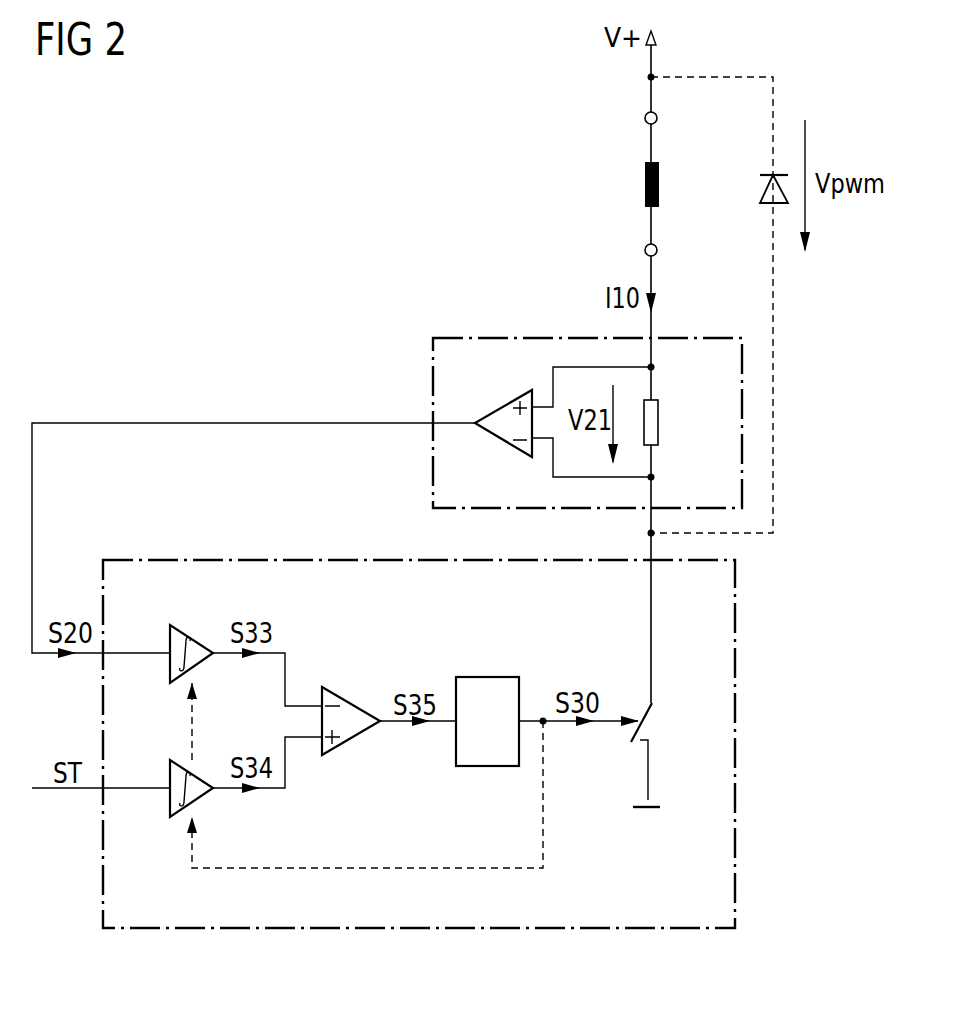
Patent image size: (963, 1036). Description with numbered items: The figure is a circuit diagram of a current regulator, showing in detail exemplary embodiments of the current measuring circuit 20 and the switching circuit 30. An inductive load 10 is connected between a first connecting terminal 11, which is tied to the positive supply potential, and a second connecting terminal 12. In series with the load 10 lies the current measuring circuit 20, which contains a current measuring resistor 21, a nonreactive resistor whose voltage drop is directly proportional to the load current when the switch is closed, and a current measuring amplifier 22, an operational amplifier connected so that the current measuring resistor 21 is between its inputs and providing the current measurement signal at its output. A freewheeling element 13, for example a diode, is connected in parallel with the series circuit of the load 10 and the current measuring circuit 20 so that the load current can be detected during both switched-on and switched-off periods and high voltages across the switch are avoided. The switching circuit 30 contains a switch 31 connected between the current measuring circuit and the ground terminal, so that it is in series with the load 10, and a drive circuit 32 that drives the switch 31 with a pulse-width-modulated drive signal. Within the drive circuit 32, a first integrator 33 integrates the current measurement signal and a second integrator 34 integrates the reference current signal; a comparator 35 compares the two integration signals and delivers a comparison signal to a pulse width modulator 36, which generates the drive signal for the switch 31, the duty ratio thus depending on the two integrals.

The load 10 is at (645, 184).
The first connecting terminal 11 is at (645, 119).
The second connecting terminal 12 is at (645, 250).
The freewheeling element 13 is at (766, 187).
The current measuring circuit 20 is at (512, 338).
The current measuring resistor 21 is at (660, 422).
The current measuring amplifier 22 is at (503, 405).
The switching circuit 30 is at (415, 930).
The switch 31 is at (655, 712).
The drive circuit 32 is at (568, 860).
The first integrator 33 is at (196, 640).
The second integrator 34 is at (206, 800).
The comparator 35 is at (358, 706).
The pulse width modulator 36 is at (487, 677).